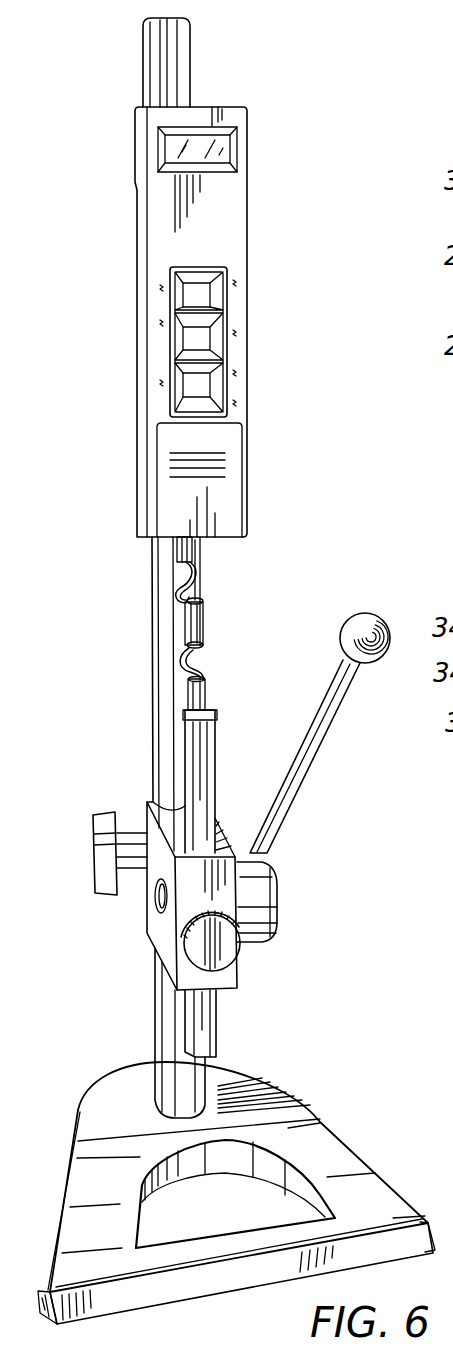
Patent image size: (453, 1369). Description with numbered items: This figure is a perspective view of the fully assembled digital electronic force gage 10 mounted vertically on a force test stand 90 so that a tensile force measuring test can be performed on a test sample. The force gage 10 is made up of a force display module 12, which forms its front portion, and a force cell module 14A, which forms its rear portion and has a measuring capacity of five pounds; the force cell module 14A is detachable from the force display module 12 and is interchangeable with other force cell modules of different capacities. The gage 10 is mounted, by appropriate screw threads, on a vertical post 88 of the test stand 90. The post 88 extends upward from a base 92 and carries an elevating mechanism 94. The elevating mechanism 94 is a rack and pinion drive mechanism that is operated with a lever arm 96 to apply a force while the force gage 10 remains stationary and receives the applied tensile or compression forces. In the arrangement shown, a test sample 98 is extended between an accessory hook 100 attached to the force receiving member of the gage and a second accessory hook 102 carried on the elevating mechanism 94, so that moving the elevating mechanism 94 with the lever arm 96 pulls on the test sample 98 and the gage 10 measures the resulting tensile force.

The digital electronic force gage 10 is at (138, 285).
The force display module 12 is at (249, 238).
The force cell module 14A is at (140, 398).
The vertical post 88 is at (142, 53).
The force test stand 90 is at (159, 1001).
The base 92 is at (78, 1110).
The elevating mechanism 94 is at (153, 873).
The lever arm 96 is at (318, 755).
The test sample 98 is at (199, 620).
The accessory hook 100 is at (176, 591).
The accessory hook 102 is at (181, 660).